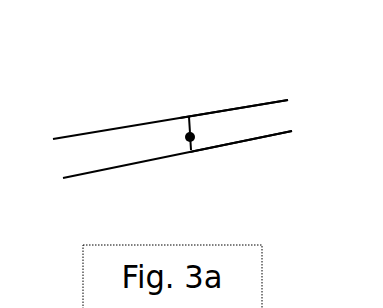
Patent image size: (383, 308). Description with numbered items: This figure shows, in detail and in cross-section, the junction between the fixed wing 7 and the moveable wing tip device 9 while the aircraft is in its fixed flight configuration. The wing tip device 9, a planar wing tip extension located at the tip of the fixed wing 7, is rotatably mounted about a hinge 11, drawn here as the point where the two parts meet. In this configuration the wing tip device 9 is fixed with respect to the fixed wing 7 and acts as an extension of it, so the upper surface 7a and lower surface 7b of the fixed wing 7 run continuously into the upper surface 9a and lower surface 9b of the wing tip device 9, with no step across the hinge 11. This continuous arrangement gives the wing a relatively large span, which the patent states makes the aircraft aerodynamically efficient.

The fixed wing 7 is at (166, 147).
The upper surface 7a is at (85, 133).
The lower surface 7b is at (135, 167).
The wing tip device 9 is at (254, 109).
The upper surface 9a is at (230, 108).
The lower surface 9b is at (235, 143).
The hinge 11 is at (192, 142).